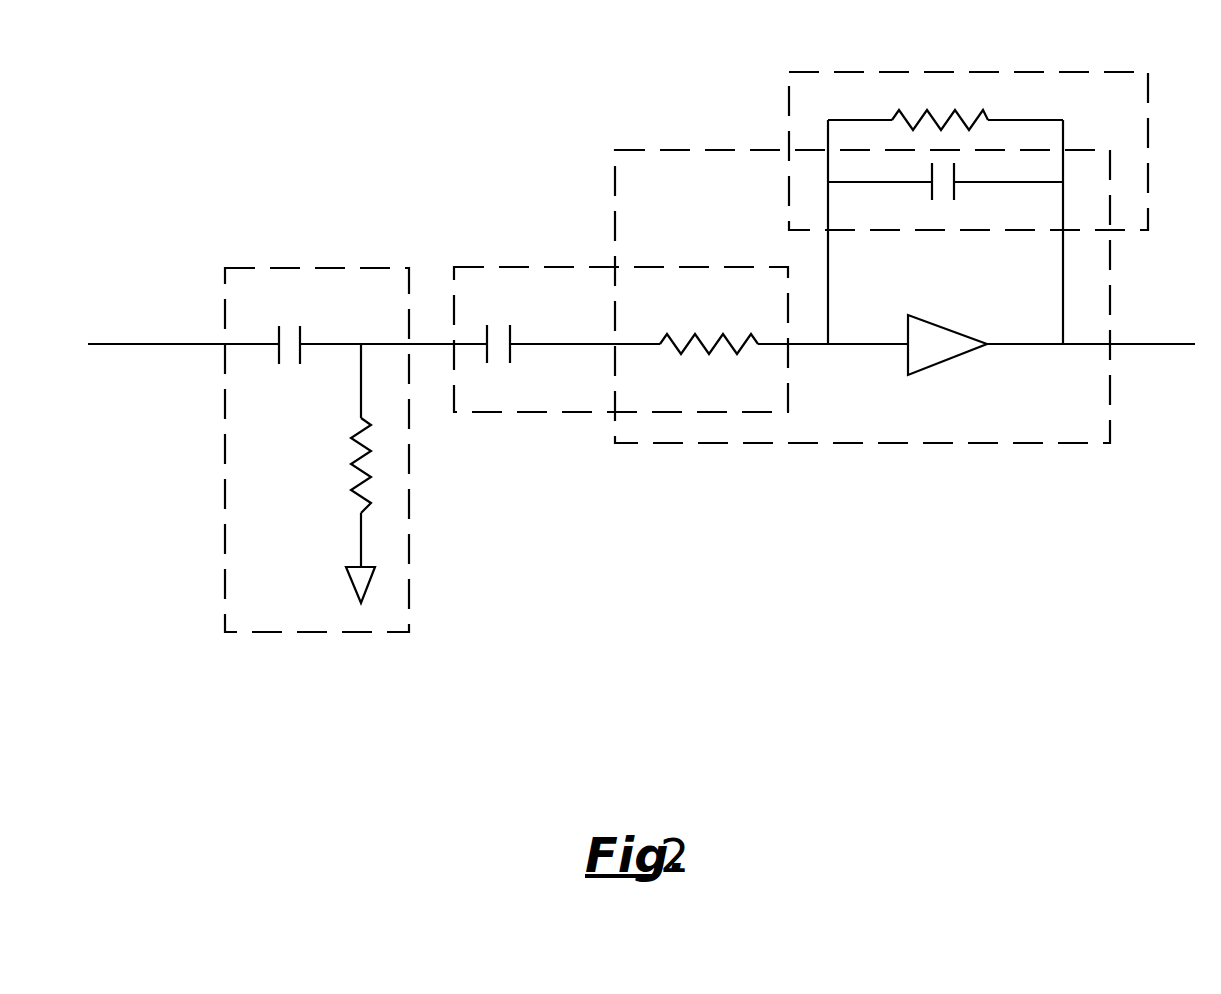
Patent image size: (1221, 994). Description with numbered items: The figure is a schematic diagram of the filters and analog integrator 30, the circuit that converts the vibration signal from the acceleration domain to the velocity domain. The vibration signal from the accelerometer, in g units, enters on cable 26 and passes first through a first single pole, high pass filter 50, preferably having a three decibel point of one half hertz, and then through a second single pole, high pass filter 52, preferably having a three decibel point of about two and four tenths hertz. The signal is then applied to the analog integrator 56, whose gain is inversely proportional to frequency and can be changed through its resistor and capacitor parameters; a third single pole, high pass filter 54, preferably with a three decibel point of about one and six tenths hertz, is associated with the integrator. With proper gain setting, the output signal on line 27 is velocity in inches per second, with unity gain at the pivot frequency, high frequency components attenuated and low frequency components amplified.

The cable 26 is at (132, 344).
The line 27 is at (1177, 343).
The filters and analog integrator 30 is at (638, 72).
The first single pole, high pass filter 50 is at (294, 268).
The second single pole, high pass filter 52 is at (540, 267).
The third single pole, high pass filter 54 is at (860, 72).
The analog integrator 56 is at (905, 443).